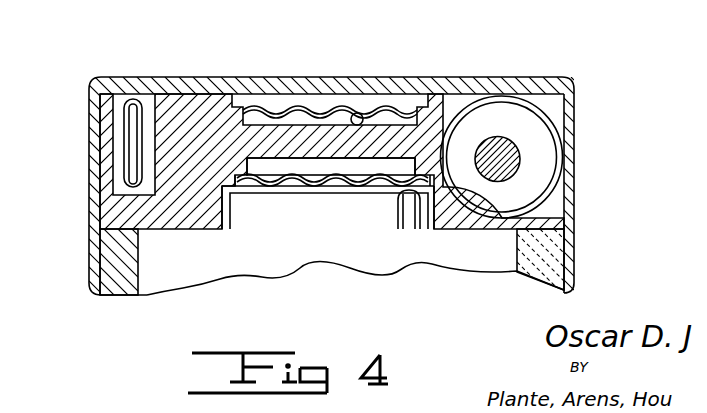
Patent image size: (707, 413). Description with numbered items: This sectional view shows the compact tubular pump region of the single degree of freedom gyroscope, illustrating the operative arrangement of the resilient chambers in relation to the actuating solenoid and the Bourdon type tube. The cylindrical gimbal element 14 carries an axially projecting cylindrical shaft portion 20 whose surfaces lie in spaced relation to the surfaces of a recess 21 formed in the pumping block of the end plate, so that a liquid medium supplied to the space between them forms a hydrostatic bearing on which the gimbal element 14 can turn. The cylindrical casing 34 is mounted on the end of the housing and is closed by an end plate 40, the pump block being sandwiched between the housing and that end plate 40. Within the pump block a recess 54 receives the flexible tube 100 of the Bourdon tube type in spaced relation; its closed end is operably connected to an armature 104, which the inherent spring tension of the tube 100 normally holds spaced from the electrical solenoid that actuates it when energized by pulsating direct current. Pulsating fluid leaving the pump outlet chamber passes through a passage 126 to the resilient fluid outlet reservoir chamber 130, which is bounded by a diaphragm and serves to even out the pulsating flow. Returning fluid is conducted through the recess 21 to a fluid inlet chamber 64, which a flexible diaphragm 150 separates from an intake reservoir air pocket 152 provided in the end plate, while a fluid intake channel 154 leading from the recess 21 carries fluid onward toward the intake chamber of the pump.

The cylindrical gimbal element 14 is at (306, 264).
The cylindrical shaft portion 20 is at (377, 221).
The recess 21 is at (226, 224).
The cylindrical casing 34 is at (577, 179).
The end plate 40 is at (323, 86).
The recess 54 is at (100, 179).
The fluid inlet chamber 64 is at (258, 187).
The flexible tube 100 is at (120, 135).
The armature 104 is at (537, 155).
The passage 126 is at (367, 120).
The resilient fluid outlet reservoir chamber 130 is at (302, 118).
The flexible diaphragm 150 is at (316, 180).
The intake reservoir air pocket 152 is at (333, 172).
The fluid intake channel 154 is at (405, 194).